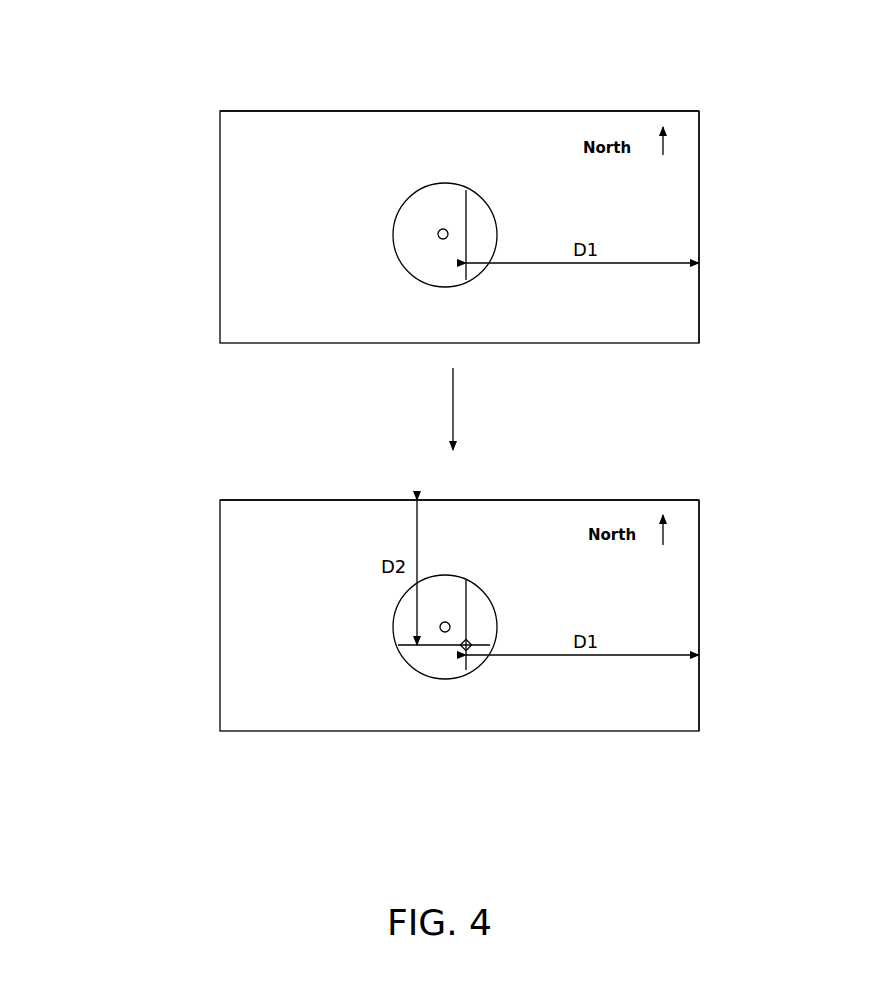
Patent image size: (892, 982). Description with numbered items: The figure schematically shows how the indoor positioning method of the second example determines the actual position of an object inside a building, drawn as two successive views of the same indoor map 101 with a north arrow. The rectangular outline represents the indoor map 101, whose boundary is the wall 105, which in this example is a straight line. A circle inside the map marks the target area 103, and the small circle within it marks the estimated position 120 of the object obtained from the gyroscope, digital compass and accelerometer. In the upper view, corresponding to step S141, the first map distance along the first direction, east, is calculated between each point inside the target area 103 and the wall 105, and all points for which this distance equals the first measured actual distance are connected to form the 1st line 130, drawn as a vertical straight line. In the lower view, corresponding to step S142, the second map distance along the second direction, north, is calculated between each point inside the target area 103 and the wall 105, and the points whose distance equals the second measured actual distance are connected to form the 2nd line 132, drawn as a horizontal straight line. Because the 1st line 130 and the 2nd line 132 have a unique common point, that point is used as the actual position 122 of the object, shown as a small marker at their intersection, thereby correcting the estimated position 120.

The indoor map 101 is at (332, 118).
The target area 103 is at (399, 215).
The wall 105 is at (677, 112).
The estimated position 120 is at (442, 240).
The actual position 122 is at (465, 651).
The 1st line 130 is at (466, 190).
The 2nd line 132 is at (413, 657).
The step of obtaining the 1st line S141 is at (185, 237).
The step of obtaining the 2nd line S142 is at (185, 597).